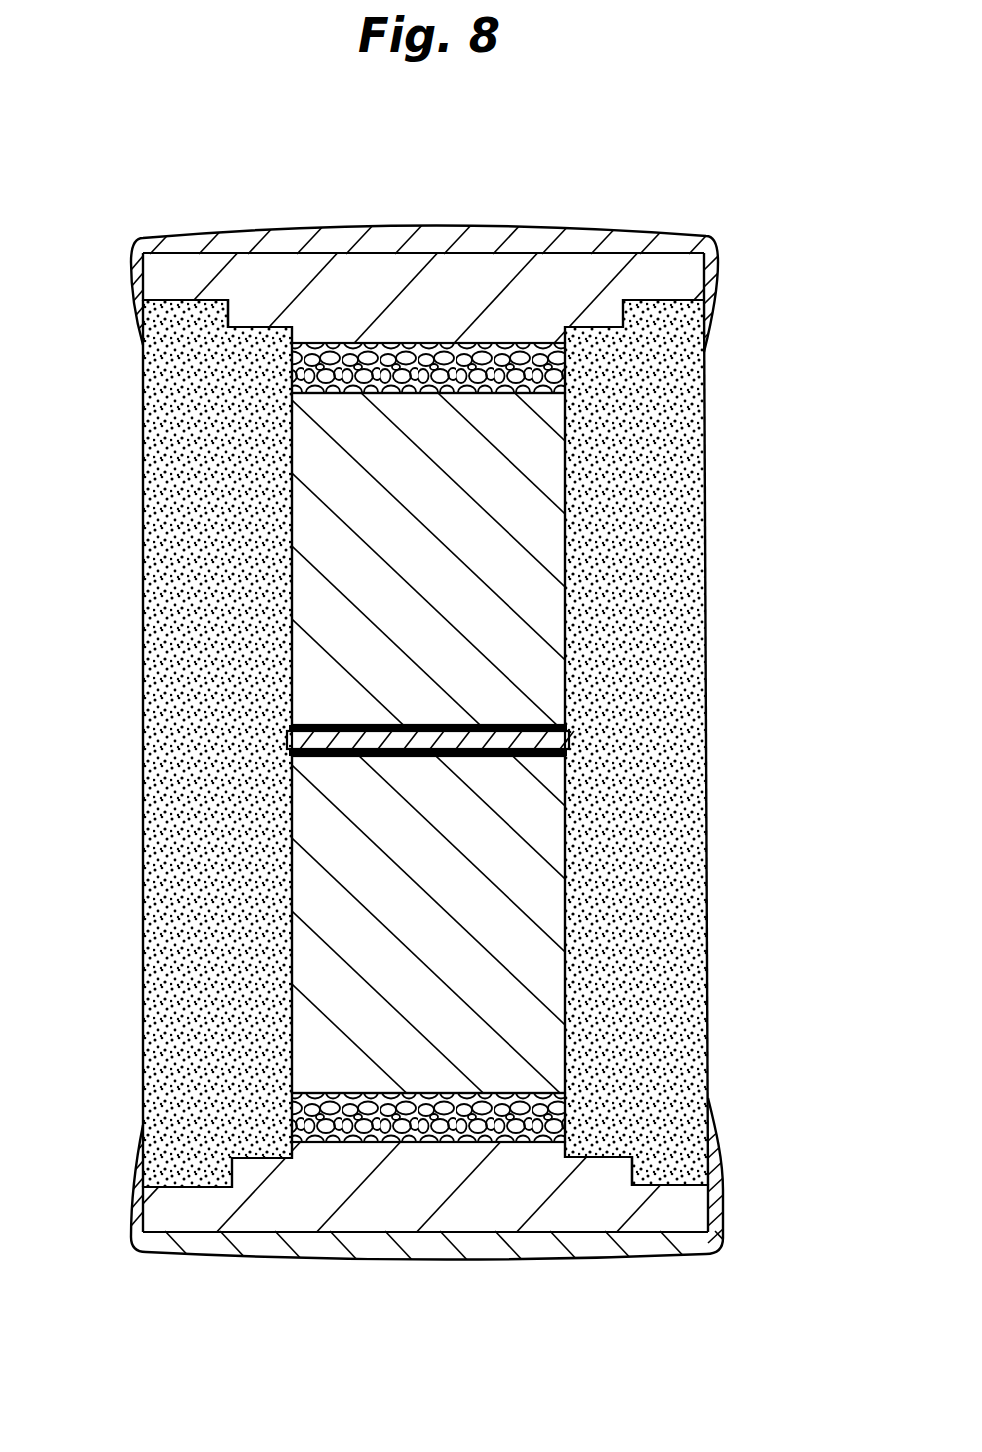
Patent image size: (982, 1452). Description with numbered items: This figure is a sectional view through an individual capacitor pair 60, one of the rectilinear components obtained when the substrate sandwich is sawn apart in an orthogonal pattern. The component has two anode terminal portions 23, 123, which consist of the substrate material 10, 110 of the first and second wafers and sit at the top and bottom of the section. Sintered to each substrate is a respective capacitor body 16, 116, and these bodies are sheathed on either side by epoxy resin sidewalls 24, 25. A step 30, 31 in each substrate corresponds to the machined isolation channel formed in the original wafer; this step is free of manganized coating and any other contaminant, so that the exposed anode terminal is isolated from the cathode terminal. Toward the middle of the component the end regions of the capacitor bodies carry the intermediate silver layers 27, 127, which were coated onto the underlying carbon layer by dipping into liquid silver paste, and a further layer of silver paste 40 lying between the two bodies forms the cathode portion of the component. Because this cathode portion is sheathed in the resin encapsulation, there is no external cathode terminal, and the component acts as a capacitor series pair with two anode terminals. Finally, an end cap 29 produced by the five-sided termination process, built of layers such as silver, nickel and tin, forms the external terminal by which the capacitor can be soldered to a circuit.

The capacitor pair 60 is at (755, 345).
The end cap 29 is at (212, 238).
The step 30 is at (176, 301).
The step 31 is at (224, 312).
The epoxy resin sidewall 24 is at (167, 535).
The epoxy resin sidewall 25 is at (680, 527).
The second substrate 110 is at (477, 270).
The anode terminal portion 123 is at (357, 276).
The substrate 10 is at (507, 1214).
The anode terminal portion 23 is at (398, 1221).
The capacitor body 116 is at (316, 595).
The capacitor body 16 is at (557, 888).
The layer of silver paste 40 is at (568, 740).
The intermediate layer of silver 127 is at (350, 725).
The intermediate layer of silver 27 is at (512, 757).